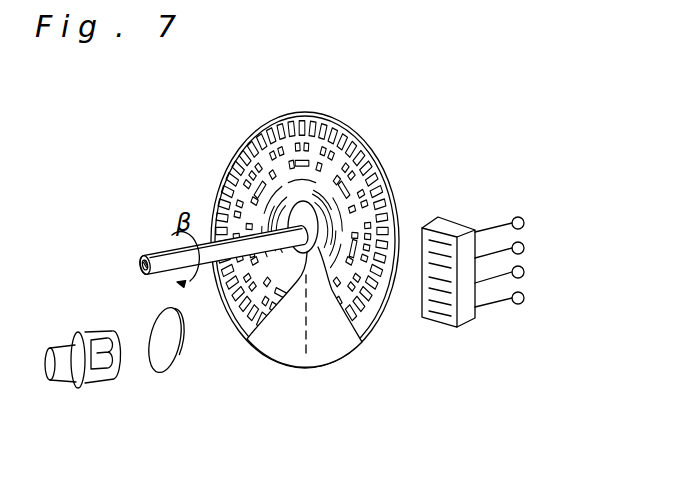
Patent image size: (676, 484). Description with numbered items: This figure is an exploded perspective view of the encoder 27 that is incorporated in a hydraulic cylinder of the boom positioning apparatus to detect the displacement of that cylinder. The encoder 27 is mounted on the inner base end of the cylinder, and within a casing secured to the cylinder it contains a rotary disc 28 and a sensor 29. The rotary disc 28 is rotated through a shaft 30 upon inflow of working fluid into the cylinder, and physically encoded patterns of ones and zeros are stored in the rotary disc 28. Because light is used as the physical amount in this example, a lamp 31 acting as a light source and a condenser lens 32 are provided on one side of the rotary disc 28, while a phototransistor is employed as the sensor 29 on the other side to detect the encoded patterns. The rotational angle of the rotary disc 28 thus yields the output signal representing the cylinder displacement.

The encoder 27 is at (332, 197).
The rotary disc 28 is at (285, 121).
The sensor 29 is at (434, 325).
The shaft 30 is at (155, 252).
The lamp 31 is at (114, 378).
The condenser lens 32 is at (181, 355).